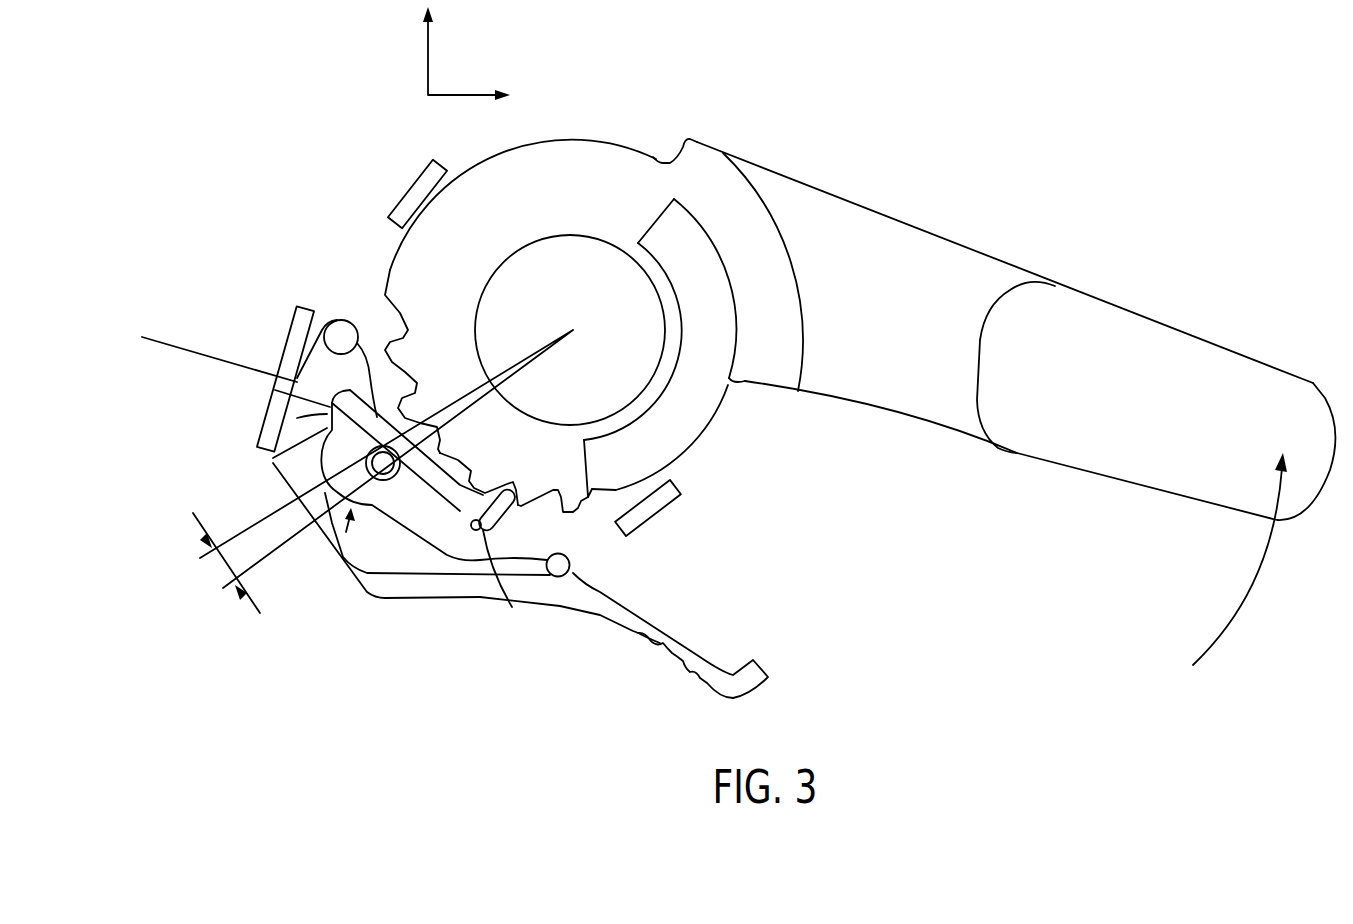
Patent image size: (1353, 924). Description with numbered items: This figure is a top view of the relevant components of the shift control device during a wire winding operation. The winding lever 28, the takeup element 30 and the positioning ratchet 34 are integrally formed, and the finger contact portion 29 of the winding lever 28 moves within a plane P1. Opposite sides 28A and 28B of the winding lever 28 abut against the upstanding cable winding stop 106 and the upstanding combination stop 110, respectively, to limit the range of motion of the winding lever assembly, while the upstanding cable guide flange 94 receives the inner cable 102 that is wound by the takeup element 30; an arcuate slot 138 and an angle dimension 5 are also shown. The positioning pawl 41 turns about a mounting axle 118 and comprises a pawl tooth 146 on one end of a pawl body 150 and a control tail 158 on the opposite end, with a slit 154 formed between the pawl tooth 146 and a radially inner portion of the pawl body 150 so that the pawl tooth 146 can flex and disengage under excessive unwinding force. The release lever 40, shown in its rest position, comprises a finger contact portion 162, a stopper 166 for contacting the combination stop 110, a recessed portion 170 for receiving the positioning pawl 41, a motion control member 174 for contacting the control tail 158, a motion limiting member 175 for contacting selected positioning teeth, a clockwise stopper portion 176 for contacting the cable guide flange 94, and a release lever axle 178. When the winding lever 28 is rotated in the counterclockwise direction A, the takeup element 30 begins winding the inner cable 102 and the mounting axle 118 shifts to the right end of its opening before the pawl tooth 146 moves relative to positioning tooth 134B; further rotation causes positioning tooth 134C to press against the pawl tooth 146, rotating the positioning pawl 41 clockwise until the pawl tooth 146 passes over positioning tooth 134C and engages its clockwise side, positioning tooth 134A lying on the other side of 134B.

The takeup element 30 is at (568, 152).
The winding lever 28 is at (830, 190).
The side of winding lever 28A is at (673, 153).
The side of winding lever 28B is at (747, 385).
The finger contact portion 29 is at (1065, 468).
The positioning ratchet 34 is at (420, 300).
The release lever 40 is at (573, 613).
The positioning pawl 41 is at (330, 545).
The cable guide flange 94 is at (293, 318).
The inner cable 102 is at (160, 335).
The cable winding stop 106 is at (397, 197).
The combination stop 110 is at (658, 510).
The mounting axle 118 is at (400, 477).
The positioning tooth 134A is at (586, 500).
The positioning tooth 134B is at (520, 495).
The positioning tooth 134C is at (483, 473).
The arcuate slot 138 is at (710, 258).
The pawl tooth 146 is at (513, 515).
The pawl body 150 is at (415, 583).
The slit 154 is at (510, 604).
The control tail 158 is at (277, 461).
The finger contact portion 162 is at (682, 662).
The stopper 166 is at (567, 567).
The recessed portion 170 is at (370, 600).
The motion control member 174 is at (297, 418).
The motion limiting member 175 is at (374, 345).
The clockwise stopper portion 176 is at (275, 390).
The release lever axle 178 is at (338, 325).
The plane P1 is at (428, 57).
The counterclockwise direction A is at (1233, 617).
The angle dimension 5 is at (220, 567).